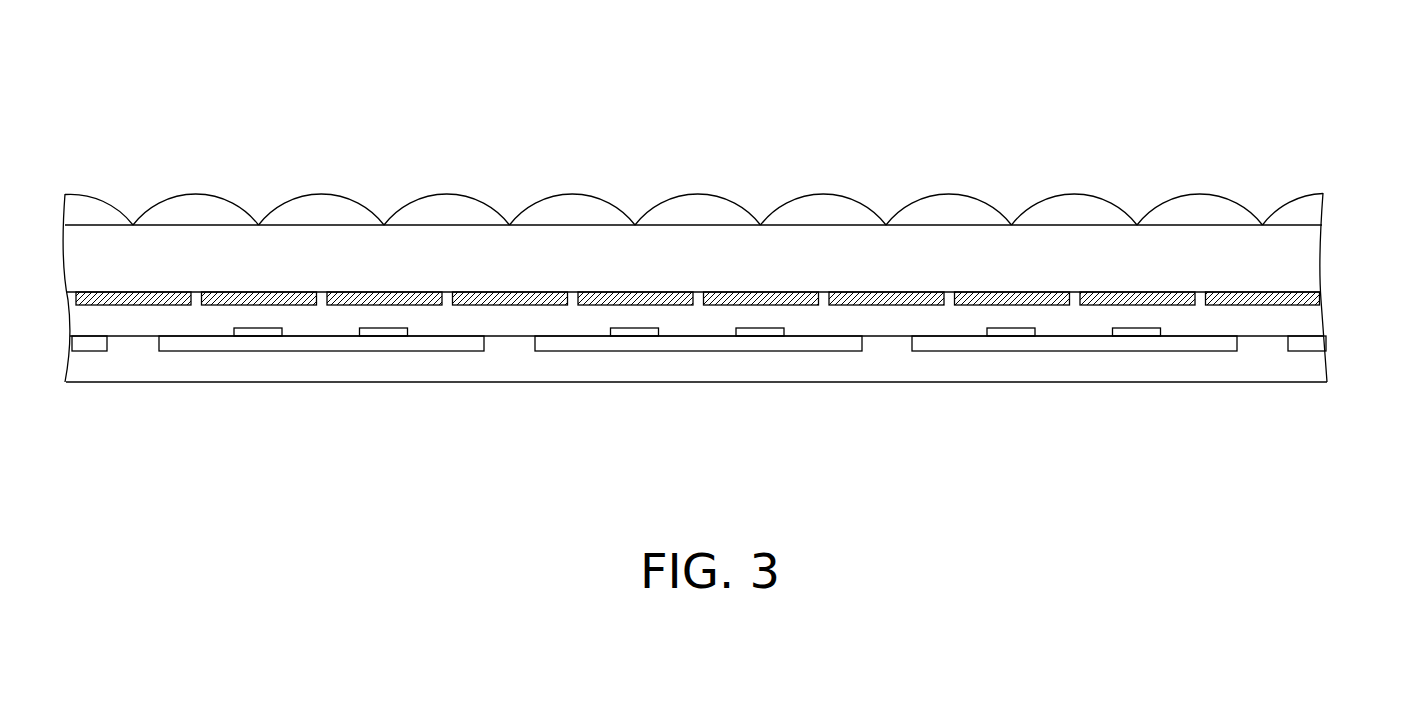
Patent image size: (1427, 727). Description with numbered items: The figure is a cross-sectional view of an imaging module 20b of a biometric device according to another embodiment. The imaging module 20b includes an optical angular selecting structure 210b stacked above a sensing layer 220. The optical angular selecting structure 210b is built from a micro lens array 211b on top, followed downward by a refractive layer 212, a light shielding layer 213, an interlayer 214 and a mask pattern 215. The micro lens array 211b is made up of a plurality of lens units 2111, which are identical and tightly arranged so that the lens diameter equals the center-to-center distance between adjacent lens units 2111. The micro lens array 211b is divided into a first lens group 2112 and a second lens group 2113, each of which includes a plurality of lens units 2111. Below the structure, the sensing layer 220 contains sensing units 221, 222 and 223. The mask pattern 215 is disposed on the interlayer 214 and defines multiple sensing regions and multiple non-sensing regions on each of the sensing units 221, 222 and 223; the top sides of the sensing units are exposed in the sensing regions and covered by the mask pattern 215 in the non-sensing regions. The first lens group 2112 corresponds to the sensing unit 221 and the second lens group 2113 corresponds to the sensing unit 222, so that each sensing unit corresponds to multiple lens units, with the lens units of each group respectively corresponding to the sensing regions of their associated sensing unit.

The imaging module 20b is at (160, 55).
The optical angular selecting structure 210b is at (1300, 184).
The micro lens array 211b is at (737, 108).
The lens unit 2111 is at (197, 207).
The first lens group 2112 is at (512, 155).
The second lens group 2113 is at (883, 155).
The refractive layer 212 is at (1303, 259).
The light shielding layer 213 is at (1312, 300).
The interlayer 214 is at (1305, 322).
The mask pattern 215 is at (623, 331).
The sensing layer 220 is at (977, 432).
The sensing unit 221 is at (423, 343).
The sensing unit 222 is at (688, 343).
The sensing unit 223 is at (978, 343).